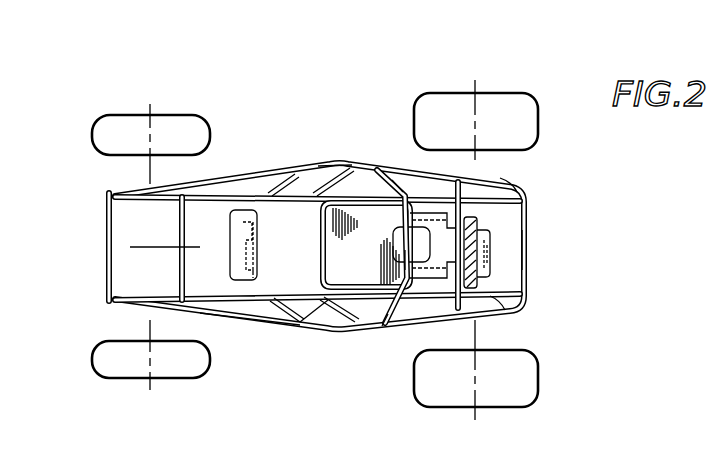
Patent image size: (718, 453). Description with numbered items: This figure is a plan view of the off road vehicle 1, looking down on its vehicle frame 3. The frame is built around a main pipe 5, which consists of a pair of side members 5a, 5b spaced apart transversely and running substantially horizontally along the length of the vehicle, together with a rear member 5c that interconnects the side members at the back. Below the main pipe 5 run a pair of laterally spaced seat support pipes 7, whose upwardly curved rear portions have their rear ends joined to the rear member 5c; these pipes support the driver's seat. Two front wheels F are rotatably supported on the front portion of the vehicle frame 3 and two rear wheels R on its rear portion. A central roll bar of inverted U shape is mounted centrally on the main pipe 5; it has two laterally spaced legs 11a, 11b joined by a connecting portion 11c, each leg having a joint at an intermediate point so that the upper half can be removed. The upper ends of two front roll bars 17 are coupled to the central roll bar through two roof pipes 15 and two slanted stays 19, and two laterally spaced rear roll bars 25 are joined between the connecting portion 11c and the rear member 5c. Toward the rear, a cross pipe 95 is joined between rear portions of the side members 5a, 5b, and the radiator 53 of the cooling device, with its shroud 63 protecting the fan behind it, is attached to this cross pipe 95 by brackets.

The off road vehicle 1 is at (558, 187).
The vehicle frame 3 is at (339, 350).
The main pipe 5 is at (263, 322).
The side member 5a is at (290, 324).
The side member 5b is at (341, 160).
The rear member 5c is at (524, 276).
The seat support pipes 7 is at (361, 186).
The leg 11a is at (388, 330).
The leg 11b is at (407, 181).
The connecting portion 11c is at (413, 268).
The roof pipes 15 is at (242, 198).
The front roll bars 17 is at (364, 284).
The slanted stays 19 is at (313, 289).
The rear roll bars 25 is at (517, 190).
The radiator 53 is at (478, 222).
The shroud 63 is at (492, 248).
The cross pipe 95 is at (461, 194).
The front wheels F is at (187, 117).
The rear wheels R is at (540, 104).